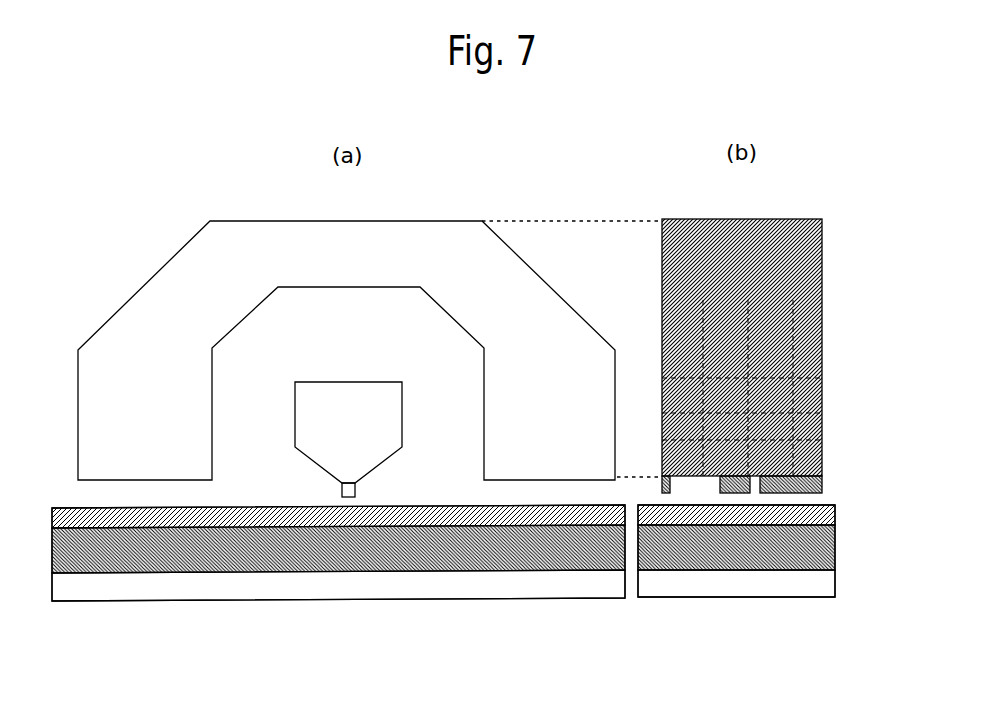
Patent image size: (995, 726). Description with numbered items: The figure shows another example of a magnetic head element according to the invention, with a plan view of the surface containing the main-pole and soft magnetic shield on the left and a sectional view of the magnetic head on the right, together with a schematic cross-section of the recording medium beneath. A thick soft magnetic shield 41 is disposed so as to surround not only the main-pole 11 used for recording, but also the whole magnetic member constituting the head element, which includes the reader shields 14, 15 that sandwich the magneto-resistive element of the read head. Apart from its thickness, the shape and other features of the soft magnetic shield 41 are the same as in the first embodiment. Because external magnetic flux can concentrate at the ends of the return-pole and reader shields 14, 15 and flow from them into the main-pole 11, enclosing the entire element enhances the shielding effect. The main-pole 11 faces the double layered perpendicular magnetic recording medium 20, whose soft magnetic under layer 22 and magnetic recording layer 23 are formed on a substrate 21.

The soft magnetic shield 41 is at (180, 262).
The main-pole 11 is at (367, 467).
The reader shield 15 is at (777, 425).
The reader shield 14 is at (813, 488).
The double layered perpendicular magnetic recording medium 20 is at (491, 553).
The substrate 21 is at (465, 586).
The soft magnetic under layer 22 is at (817, 547).
The magnetic recording layer 23 is at (817, 517).